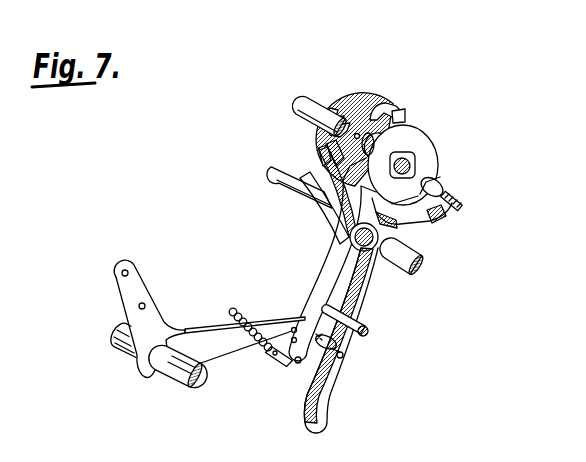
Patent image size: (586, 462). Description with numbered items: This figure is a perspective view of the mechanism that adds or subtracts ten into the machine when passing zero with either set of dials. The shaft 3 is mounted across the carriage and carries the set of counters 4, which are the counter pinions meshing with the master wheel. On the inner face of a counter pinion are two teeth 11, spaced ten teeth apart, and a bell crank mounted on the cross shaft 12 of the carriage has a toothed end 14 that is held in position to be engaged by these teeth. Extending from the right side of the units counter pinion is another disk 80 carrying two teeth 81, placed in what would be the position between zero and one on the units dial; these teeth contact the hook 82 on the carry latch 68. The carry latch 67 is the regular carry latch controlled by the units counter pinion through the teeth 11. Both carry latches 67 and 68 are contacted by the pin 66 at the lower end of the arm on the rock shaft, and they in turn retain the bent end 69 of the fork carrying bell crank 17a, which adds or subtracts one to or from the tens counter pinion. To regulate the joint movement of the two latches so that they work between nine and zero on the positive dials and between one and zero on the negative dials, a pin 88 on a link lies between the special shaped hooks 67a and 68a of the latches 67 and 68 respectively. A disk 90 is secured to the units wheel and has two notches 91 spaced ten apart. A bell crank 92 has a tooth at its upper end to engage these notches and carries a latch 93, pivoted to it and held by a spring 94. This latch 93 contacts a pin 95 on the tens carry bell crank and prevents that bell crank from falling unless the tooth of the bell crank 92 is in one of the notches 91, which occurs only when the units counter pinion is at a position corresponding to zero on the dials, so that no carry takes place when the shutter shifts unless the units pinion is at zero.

The shaft 3 is at (299, 101).
The counters 4 is at (349, 100).
The disk 80 is at (372, 108).
The teeth 11 is at (381, 108).
The teeth 81 is at (397, 112).
The disk 90 is at (420, 147).
The notches 91 is at (420, 172).
The hook 67a is at (440, 180).
The pin 88 is at (458, 202).
The hook 68a is at (440, 218).
The cross shaft 12 is at (425, 267).
The pin 66 is at (368, 326).
The pin 95 is at (338, 344).
The bent end 69 is at (342, 357).
The carry latch 68 is at (325, 398).
The carry latch 67 is at (311, 390).
The latch 93 is at (268, 363).
The bell crank 92 is at (312, 280).
The spring 94 is at (244, 312).
The fork carrying bell crank 17a is at (154, 324).
The hook 82 is at (336, 188).
The toothed end 14 is at (272, 173).